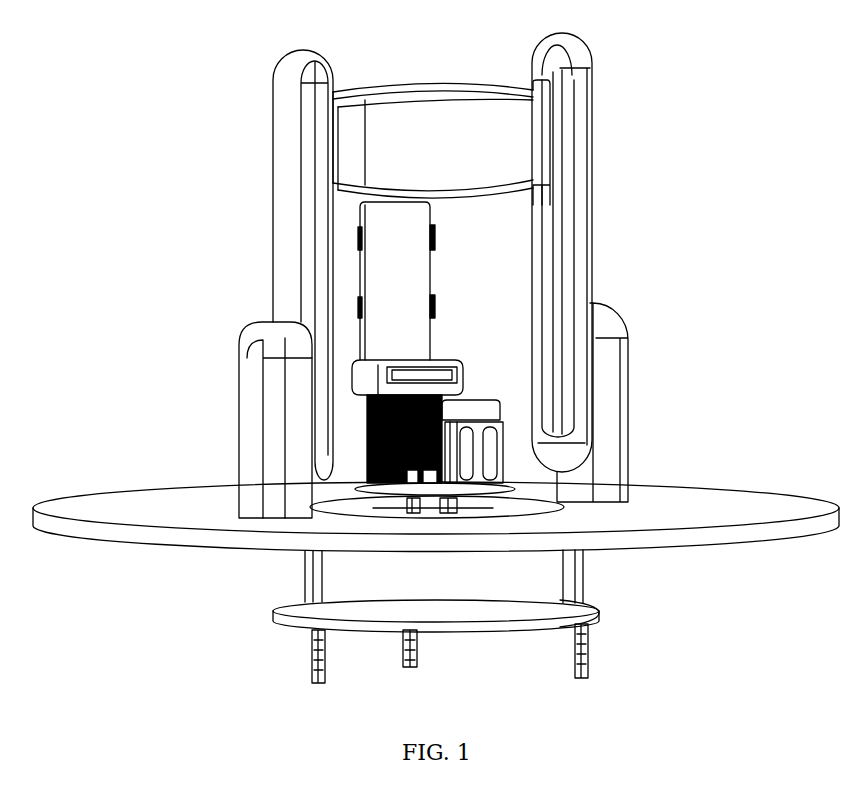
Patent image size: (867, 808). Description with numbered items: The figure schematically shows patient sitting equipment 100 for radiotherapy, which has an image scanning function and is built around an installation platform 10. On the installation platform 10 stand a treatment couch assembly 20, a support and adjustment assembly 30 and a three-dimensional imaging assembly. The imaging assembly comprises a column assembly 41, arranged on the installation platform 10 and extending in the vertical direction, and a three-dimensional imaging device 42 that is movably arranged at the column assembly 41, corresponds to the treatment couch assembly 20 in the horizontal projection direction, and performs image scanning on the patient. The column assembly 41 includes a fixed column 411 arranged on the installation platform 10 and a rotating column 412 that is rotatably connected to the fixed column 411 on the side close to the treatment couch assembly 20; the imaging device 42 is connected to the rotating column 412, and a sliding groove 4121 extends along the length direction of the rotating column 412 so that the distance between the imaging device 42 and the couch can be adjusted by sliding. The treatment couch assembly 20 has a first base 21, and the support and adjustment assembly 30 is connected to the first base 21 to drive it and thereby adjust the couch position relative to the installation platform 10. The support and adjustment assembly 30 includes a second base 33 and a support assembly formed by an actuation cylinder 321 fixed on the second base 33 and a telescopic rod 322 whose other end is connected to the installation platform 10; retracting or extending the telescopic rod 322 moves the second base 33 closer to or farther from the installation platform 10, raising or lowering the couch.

The patient sitting equipment 100 is at (120, 63).
The installation platform 10 is at (680, 502).
The treatment couch assembly 20 is at (418, 287).
The first base 21 is at (328, 480).
The support and adjustment assembly 30 is at (338, 578).
The actuation cylinder 321 is at (418, 645).
The telescopic rod 322 is at (585, 560).
The second base 33 is at (592, 617).
The column assembly 41 is at (608, 267).
The fixed column 411 is at (273, 393).
The rotating column 412 is at (293, 262).
The sliding groove 4121 is at (547, 255).
The 3D imaging device 42 is at (407, 125).